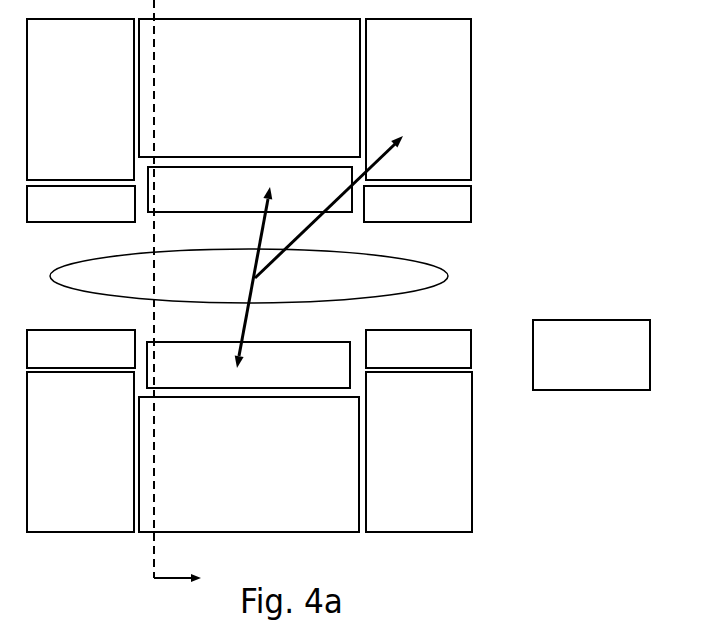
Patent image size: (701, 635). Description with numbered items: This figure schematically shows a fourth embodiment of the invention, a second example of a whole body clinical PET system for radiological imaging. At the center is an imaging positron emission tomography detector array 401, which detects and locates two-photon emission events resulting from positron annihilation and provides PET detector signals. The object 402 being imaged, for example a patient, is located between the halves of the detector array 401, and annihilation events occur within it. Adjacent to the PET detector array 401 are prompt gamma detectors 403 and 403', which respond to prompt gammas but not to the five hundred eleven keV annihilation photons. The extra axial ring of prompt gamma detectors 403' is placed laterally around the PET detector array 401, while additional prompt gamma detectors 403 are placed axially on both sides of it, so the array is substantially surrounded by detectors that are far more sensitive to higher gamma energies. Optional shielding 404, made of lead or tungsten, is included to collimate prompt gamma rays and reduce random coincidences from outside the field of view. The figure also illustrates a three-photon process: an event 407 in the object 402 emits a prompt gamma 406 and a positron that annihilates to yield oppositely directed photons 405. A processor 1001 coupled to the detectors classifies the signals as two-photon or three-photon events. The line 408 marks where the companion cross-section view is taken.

The imaging PET detector array 401 is at (175, 203).
The object 402 is at (171, 290).
The prompt gamma detector 403 is at (249, 275).
The prompt gamma detector 403' is at (249, 275).
The shielding 404 is at (58, 216).
The oppositely directed photons 405 is at (262, 238).
The prompt gamma 406 is at (403, 145).
The event 407 is at (255, 280).
The line 408 is at (153, 572).
The processor 1001 is at (562, 373).